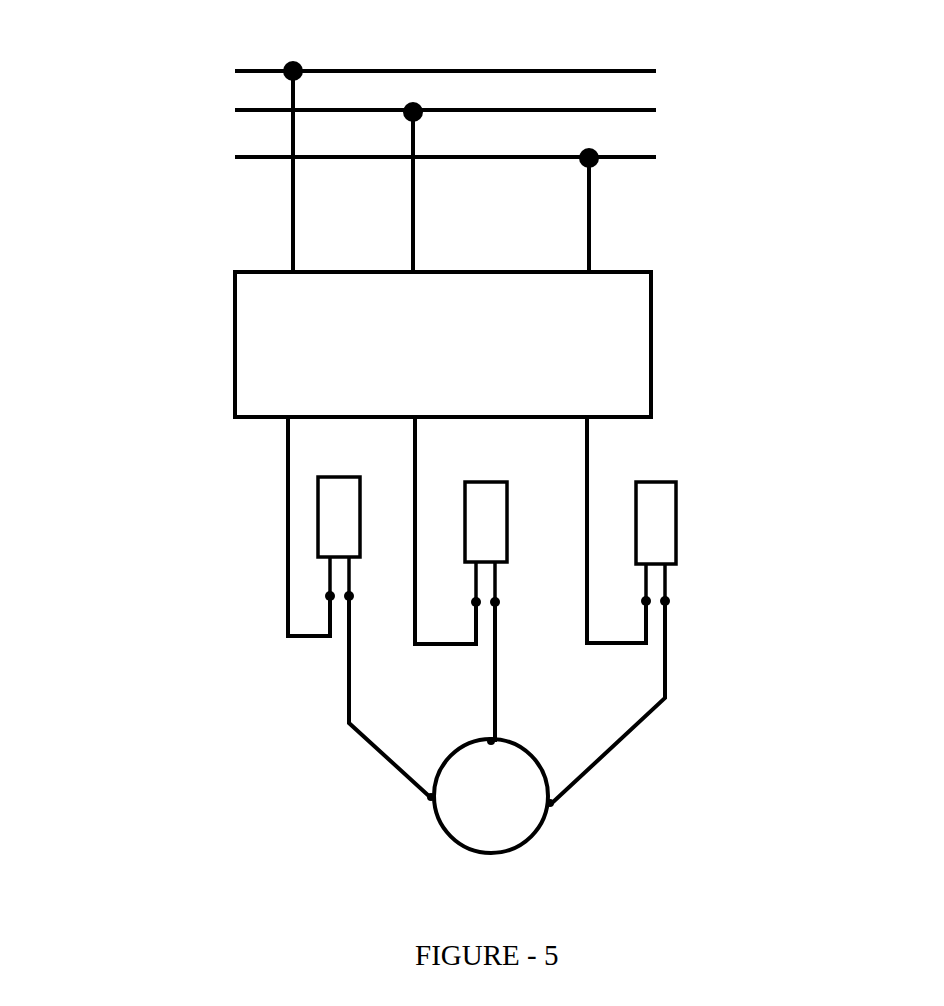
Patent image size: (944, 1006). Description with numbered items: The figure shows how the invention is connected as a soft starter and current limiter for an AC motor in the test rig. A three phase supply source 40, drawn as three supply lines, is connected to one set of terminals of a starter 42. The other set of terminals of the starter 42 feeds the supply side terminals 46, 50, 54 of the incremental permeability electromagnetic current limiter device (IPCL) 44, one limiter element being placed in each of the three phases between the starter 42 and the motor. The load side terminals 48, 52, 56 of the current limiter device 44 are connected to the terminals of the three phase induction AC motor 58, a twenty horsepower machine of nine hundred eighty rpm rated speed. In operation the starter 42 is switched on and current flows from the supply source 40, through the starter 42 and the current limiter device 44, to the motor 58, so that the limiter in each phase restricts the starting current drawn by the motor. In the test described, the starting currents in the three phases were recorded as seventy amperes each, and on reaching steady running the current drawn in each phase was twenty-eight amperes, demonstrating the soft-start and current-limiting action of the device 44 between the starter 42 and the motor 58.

The three phase supply source 40 is at (628, 73).
The starter 42 is at (625, 353).
The incremental permeability electromagnetic current limiter device (IPCL) 44 is at (332, 505).
The supply side terminal 46 is at (330, 596).
The load side terminal 48 is at (345, 618).
The supply side terminal 50 is at (481, 600).
The load side terminal 52 is at (497, 606).
The supply side terminal 54 is at (647, 605).
The load side terminal 56 is at (670, 608).
The three phase induction AC motor 58 is at (537, 832).